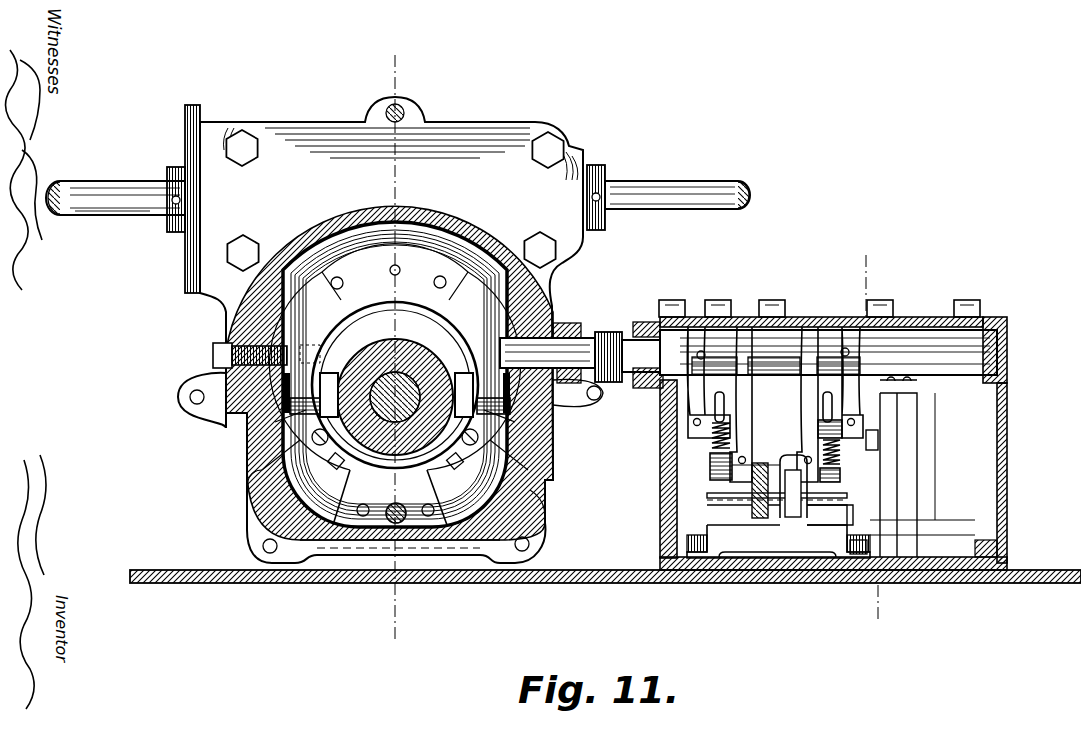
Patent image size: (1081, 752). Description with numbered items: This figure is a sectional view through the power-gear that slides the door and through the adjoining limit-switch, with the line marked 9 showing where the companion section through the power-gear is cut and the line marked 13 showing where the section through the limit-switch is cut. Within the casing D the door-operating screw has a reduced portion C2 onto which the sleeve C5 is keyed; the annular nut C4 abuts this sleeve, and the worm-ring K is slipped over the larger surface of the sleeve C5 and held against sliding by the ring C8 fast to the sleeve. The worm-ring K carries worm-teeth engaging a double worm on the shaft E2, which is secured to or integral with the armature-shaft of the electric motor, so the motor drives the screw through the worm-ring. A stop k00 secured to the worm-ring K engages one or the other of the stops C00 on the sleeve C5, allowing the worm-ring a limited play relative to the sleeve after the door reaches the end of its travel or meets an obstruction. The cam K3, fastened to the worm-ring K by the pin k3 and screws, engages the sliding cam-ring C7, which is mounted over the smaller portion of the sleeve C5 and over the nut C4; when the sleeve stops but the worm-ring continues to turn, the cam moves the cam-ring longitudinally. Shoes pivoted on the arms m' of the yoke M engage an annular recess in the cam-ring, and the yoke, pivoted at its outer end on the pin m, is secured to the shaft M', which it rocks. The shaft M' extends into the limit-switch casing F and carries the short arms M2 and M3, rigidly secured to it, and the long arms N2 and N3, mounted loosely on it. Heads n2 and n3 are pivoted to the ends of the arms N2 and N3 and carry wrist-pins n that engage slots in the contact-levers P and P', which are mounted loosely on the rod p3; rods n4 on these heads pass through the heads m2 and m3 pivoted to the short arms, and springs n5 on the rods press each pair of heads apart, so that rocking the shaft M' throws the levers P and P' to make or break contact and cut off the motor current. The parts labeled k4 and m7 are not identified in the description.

The section line 9 is at (460, 70).
The section line 13 is at (925, 270).
The shaft E2 is at (86, 188).
The casing D is at (490, 182).
The cam K3 is at (362, 272).
The ring k4 is at (494, 224).
The worm-ring K is at (527, 483).
The yoke M is at (395, 398).
The pin k3 is at (400, 272).
The sliding cam-ring C7 is at (428, 362).
The reduced portion of screw C2 is at (440, 380).
The annular nut C4 is at (335, 440).
The ring C8 is at (493, 460).
The casing wall m7 is at (598, 420).
The arm m' is at (383, 415).
The pin m is at (239, 341).
The shaft M' is at (748, 325).
The short arm M2 is at (690, 355).
The long arm N2 is at (742, 340).
The long arm N3 is at (805, 340).
The short arm M3 is at (847, 343).
The limit-switch casing F is at (840, 422).
The rod n4 is at (723, 402).
The head m2 is at (714, 432).
The wrist-pin n is at (786, 480).
The head n2 is at (722, 467).
The head m3 is at (840, 434).
The spring n5 is at (840, 448).
The head n3 is at (842, 458).
The rod p3 is at (707, 510).
The double contact-lever P' is at (753, 544).
The single contact-lever P is at (794, 547).
The stop C00 is at (557, 537).
The sleeve C5 is at (297, 550).
The stop k00 is at (373, 515).